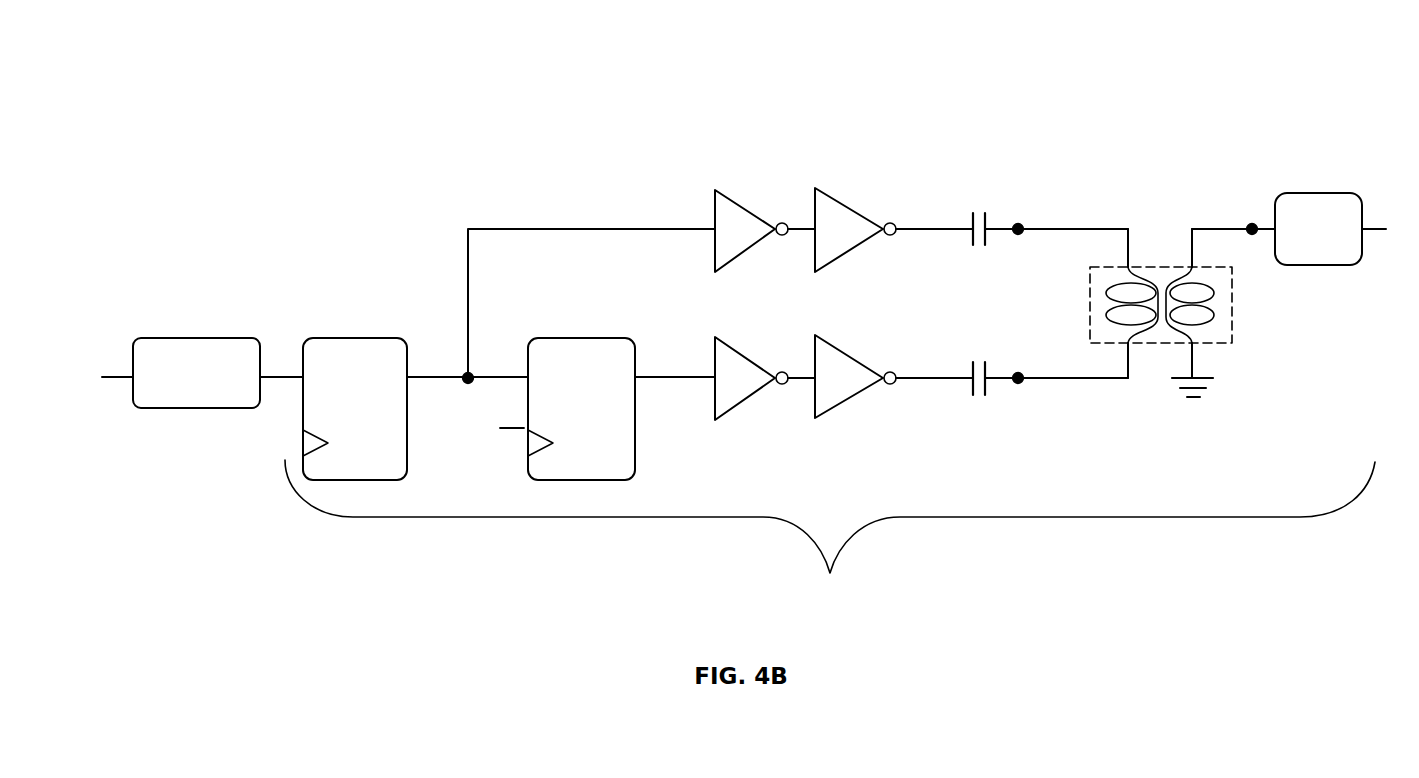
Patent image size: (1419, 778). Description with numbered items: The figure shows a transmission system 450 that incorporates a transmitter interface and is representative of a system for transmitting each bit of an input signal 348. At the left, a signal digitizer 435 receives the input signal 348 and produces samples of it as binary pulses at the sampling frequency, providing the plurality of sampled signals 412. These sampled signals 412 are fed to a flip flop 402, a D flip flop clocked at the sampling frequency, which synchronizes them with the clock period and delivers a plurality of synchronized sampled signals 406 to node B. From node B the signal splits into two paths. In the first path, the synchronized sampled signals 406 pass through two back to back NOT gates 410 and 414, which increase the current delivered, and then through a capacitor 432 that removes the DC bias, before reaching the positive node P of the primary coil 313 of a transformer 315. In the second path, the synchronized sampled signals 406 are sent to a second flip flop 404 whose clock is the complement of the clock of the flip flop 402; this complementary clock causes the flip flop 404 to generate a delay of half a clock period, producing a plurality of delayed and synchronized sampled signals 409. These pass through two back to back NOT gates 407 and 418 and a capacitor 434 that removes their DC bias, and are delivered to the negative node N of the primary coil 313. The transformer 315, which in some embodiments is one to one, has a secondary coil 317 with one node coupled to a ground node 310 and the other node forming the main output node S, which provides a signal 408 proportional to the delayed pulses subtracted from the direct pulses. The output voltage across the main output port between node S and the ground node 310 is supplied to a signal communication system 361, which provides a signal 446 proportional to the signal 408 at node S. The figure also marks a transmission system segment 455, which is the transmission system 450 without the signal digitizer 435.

The transmission system 450 is at (1094, 108).
The input signal 348 is at (105, 375).
The signal digitizer 435 is at (197, 338).
The sampled signals 412 is at (268, 375).
The flip flop 402 is at (353, 338).
The synchronized sampled signals 406 is at (425, 375).
The flip flop 404 is at (582, 338).
The delayed and synchronized sampled signals 409 is at (668, 377).
The NOT gate 410 is at (720, 243).
The NOT gate 414 is at (822, 243).
The NOT gate 407 is at (720, 392).
The NOT gate 418 is at (822, 392).
The capacitor 432 is at (970, 215).
The capacitor 434 is at (970, 365).
The transformer 315 is at (1088, 295).
The primary coil 313 is at (1105, 315).
The secondary coil 317 is at (1202, 325).
The ground node 310 is at (1196, 399).
The signal 408 is at (1211, 229).
The signal communication system 361 is at (1302, 244).
The signal 446 is at (1375, 229).
The transmission system segment 455 is at (830, 536).